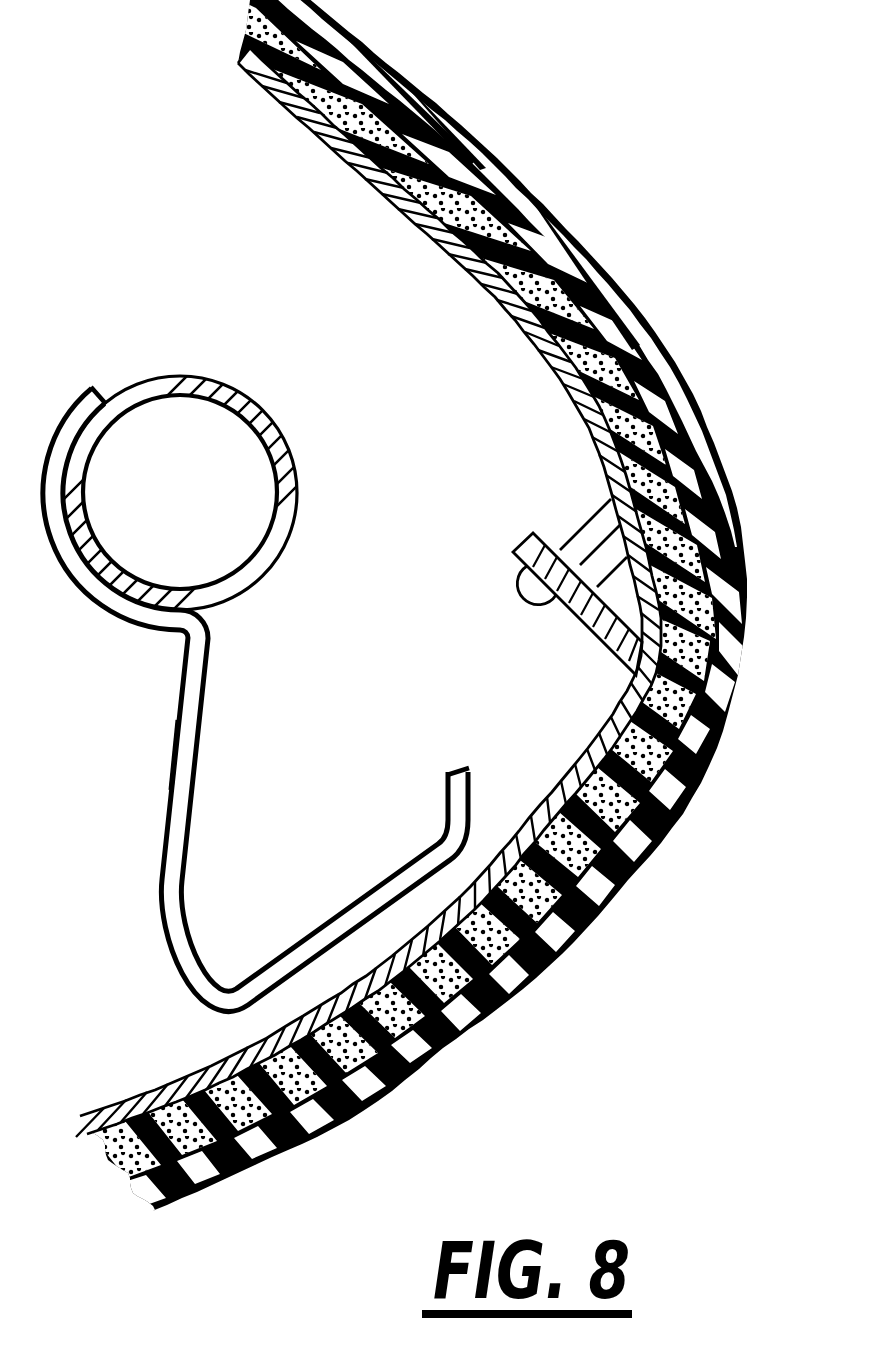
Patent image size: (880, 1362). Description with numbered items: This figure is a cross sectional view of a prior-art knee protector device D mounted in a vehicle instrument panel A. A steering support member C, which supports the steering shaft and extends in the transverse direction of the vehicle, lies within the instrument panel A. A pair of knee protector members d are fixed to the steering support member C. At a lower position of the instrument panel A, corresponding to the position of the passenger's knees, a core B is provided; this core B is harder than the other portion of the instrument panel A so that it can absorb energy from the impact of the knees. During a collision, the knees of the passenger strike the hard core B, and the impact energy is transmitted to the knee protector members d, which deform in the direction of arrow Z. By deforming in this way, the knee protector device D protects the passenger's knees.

The instrument panel A is at (590, 262).
The core B is at (157, 1086).
The steering support member C is at (252, 398).
The knee protector device D is at (140, 873).
The knee protector member d is at (174, 763).
The arrow indicating deformation direction Z is at (375, 873).